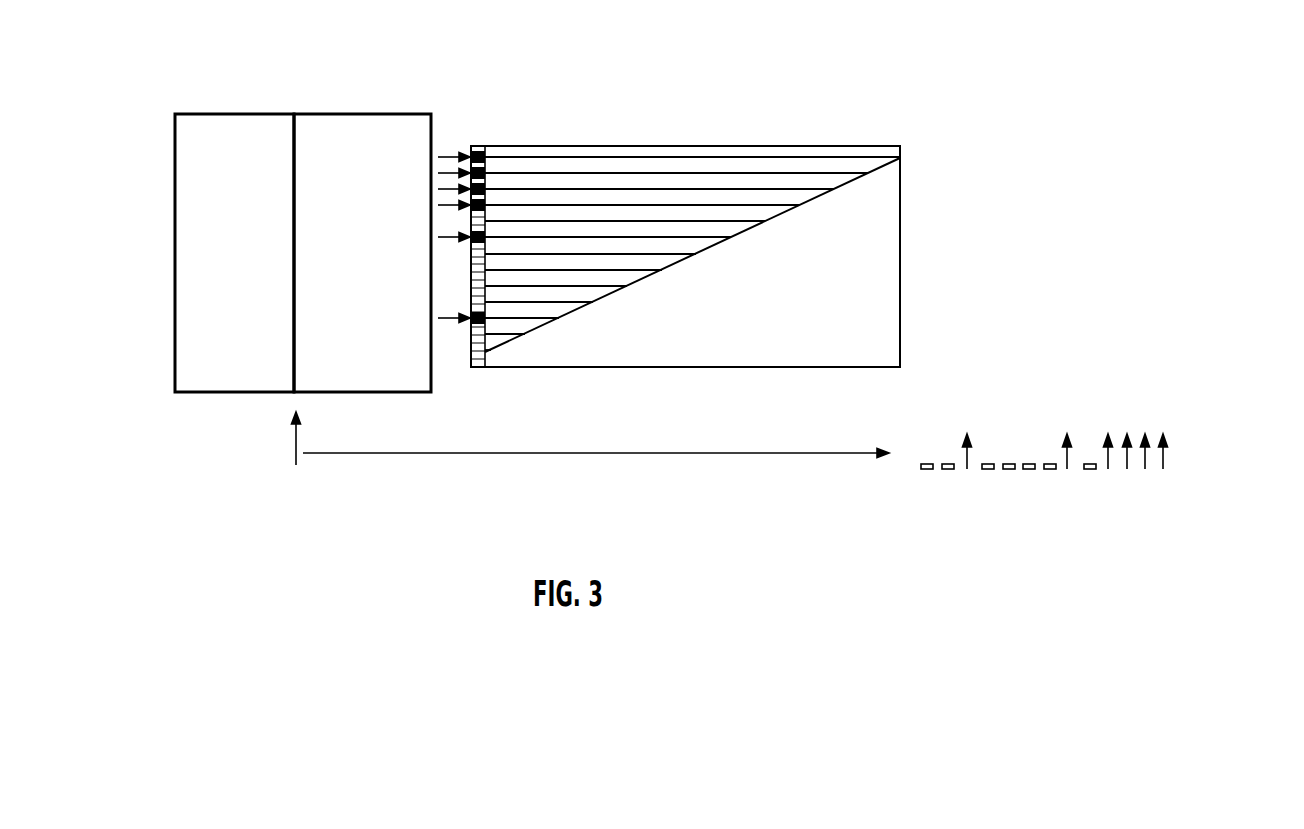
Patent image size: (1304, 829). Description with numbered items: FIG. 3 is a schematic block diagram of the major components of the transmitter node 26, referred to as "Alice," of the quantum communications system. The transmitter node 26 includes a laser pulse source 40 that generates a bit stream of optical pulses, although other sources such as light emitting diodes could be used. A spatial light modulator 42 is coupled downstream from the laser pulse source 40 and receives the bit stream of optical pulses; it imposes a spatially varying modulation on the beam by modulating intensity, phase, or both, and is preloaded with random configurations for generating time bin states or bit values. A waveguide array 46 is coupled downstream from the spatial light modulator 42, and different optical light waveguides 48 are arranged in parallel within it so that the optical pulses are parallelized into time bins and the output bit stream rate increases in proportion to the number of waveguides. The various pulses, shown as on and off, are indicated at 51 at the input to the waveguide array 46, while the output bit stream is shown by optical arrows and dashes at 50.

The transmitter node 26 is at (546, 33).
The laser pulse source 40 is at (262, 113).
The spatial light modulator 42 is at (368, 113).
The waveguide array 46 is at (685, 218).
The optical light waveguides 48 is at (637, 205).
The output bit stream 50 is at (1210, 452).
The pulses 51 is at (460, 131).